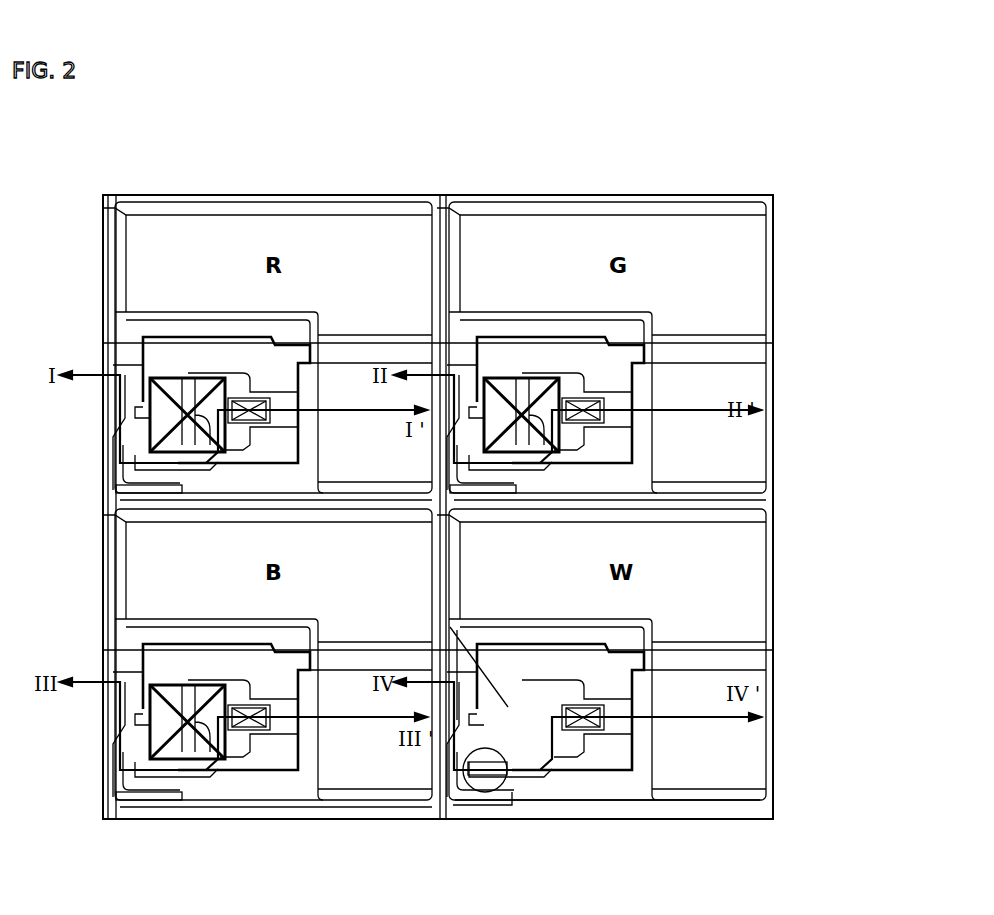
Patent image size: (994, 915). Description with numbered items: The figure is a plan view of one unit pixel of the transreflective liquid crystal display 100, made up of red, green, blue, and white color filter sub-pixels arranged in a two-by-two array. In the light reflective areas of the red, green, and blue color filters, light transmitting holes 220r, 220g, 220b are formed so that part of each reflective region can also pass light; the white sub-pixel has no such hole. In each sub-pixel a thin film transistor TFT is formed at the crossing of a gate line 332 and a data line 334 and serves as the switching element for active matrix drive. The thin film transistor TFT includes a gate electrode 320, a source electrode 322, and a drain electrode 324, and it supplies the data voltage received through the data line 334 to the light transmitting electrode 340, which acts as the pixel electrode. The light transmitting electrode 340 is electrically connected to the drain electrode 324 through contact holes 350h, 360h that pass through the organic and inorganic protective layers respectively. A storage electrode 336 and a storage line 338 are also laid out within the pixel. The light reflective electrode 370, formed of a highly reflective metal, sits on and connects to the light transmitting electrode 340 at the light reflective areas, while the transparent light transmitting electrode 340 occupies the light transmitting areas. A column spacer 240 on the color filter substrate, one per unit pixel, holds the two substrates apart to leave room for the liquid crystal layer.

The transreflective liquid crystal display 100 is at (792, 119).
The light transmitting hole 220r is at (170, 378).
The light transmitting hole 220g is at (502, 377).
The light transmitting hole 220b is at (150, 712).
The contact hole 350h is at (605, 404).
The contact hole 360h is at (601, 416).
The data line 334 is at (461, 537).
The storage line 338 is at (712, 648).
The storage electrode 336 is at (633, 720).
The light transmitting electrode 340 is at (767, 763).
The source electrode 322 is at (145, 807).
The drain electrode 324 is at (183, 802).
The gate electrode 320 is at (203, 780).
The gate line 332 is at (356, 800).
The thin film transistor TFT is at (475, 806).
The column spacer 240 is at (520, 795).
The light reflective electrode 370 is at (605, 800).